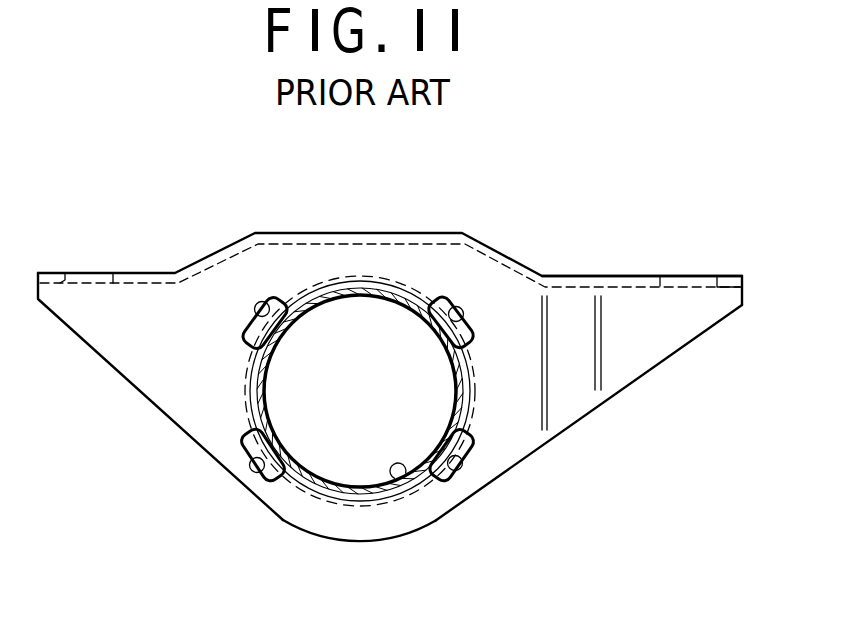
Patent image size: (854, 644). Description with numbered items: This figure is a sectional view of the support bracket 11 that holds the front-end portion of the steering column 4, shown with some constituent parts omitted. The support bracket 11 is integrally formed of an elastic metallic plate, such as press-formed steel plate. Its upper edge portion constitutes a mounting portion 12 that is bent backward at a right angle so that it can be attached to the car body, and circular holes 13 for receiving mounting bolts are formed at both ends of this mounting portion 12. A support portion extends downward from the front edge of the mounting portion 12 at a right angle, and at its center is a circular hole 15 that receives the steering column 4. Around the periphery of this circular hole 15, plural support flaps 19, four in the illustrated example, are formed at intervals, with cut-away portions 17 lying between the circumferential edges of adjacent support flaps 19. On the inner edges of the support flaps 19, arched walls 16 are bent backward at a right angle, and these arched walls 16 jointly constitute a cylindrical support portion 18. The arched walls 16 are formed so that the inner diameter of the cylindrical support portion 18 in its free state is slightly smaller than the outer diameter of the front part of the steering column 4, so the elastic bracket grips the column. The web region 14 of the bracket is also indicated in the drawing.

The steering column 4 is at (471, 360).
The support bracket 11 is at (393, 230).
The mounting portion 12 is at (605, 276).
The circular holes 13 is at (80, 274).
The web portion 14 is at (506, 445).
The circular hole 15 is at (403, 476).
The arched walls 16 is at (320, 282).
The cut-away portions 17 is at (268, 300).
The cylindrical support portion 18 is at (244, 378).
The support flaps 19 is at (354, 282).